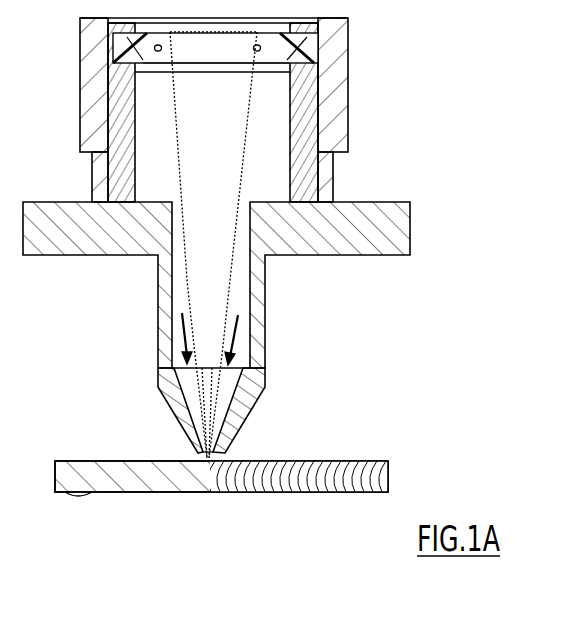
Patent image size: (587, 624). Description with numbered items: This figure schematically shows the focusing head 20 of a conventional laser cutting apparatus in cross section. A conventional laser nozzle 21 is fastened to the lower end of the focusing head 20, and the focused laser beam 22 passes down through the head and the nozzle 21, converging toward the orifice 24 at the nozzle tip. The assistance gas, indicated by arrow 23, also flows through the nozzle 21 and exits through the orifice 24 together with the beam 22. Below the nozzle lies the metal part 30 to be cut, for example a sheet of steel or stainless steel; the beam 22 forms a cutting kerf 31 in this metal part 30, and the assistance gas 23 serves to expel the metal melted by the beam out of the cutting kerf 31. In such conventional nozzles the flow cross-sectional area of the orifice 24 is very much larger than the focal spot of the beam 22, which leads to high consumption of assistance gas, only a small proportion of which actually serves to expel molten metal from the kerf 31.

The focusing head 20 is at (258, 318).
The laser nozzle 21 is at (247, 412).
The laser beam 22 is at (222, 172).
The assistance gas 23 is at (180, 337).
The orifice 24 is at (197, 453).
The metal part 30 is at (103, 490).
The cutting kerf 31 is at (240, 488).